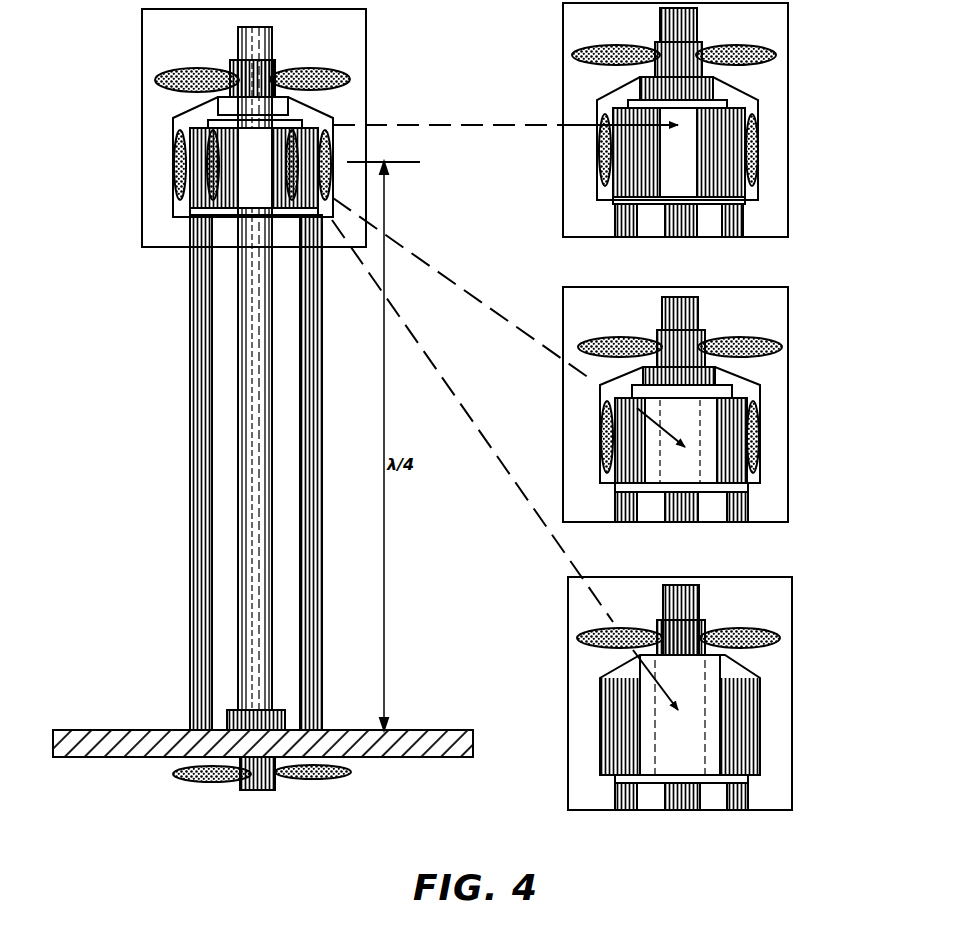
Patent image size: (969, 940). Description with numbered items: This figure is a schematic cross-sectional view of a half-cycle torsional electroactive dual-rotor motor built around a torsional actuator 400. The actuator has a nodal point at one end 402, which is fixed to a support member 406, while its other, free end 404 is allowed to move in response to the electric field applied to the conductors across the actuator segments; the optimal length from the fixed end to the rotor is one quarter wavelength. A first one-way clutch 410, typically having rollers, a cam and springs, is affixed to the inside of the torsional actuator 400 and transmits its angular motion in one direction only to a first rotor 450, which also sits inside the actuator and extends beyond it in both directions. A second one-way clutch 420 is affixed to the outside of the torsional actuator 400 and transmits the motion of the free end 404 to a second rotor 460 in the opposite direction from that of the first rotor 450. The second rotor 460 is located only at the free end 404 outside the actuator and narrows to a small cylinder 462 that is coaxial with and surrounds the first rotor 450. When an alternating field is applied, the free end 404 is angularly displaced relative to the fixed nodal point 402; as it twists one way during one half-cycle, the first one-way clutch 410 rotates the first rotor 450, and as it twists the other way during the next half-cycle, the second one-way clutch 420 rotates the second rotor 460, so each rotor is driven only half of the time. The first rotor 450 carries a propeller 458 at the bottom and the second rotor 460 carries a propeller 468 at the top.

The torsional actuator 400 is at (219, 408).
The nodal point end 402 is at (188, 725).
The free end 404 is at (347, 147).
The support member 406 is at (165, 730).
The first one-way clutch 410 is at (202, 185).
The second one-way clutch 420 is at (175, 175).
The first rotor 450 is at (248, 342).
The propeller 458 is at (180, 777).
The second rotor 460 is at (322, 127).
The small cylinder 462 is at (272, 65).
The propeller 468 is at (352, 79).